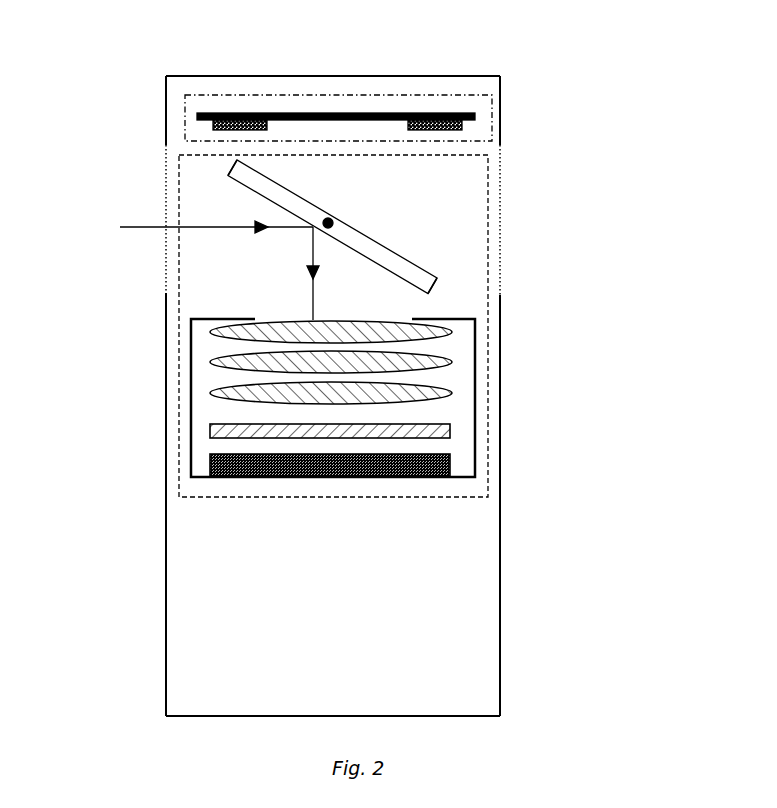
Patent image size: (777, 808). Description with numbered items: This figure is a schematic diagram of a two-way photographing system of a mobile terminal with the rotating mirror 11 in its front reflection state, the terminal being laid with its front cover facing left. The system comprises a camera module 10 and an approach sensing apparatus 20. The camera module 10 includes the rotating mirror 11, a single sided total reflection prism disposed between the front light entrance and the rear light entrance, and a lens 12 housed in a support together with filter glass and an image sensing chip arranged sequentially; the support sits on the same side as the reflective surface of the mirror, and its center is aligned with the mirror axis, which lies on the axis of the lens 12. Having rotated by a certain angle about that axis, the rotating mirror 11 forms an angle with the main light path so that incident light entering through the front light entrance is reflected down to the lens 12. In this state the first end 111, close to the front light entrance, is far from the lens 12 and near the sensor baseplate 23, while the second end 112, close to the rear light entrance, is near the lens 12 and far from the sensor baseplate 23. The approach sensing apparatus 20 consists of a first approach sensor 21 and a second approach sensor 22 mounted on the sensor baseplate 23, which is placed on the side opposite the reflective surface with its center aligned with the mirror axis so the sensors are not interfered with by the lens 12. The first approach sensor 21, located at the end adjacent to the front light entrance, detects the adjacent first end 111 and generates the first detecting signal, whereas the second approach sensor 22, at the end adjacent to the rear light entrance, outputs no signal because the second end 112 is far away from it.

The camera module 10 is at (490, 446).
The rotating mirror 11 is at (377, 242).
The first end 111 is at (228, 176).
The second end 112 is at (433, 284).
The lens 12 is at (452, 390).
The approach sensing apparatus 20 is at (491, 111).
The first approach sensor 21 is at (213, 115).
The second approach sensor 22 is at (451, 113).
The sensor baseplate 23 is at (336, 113).